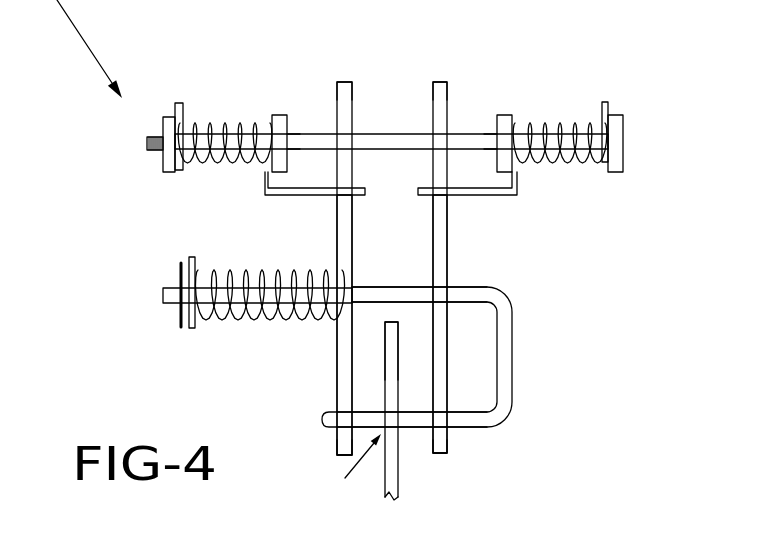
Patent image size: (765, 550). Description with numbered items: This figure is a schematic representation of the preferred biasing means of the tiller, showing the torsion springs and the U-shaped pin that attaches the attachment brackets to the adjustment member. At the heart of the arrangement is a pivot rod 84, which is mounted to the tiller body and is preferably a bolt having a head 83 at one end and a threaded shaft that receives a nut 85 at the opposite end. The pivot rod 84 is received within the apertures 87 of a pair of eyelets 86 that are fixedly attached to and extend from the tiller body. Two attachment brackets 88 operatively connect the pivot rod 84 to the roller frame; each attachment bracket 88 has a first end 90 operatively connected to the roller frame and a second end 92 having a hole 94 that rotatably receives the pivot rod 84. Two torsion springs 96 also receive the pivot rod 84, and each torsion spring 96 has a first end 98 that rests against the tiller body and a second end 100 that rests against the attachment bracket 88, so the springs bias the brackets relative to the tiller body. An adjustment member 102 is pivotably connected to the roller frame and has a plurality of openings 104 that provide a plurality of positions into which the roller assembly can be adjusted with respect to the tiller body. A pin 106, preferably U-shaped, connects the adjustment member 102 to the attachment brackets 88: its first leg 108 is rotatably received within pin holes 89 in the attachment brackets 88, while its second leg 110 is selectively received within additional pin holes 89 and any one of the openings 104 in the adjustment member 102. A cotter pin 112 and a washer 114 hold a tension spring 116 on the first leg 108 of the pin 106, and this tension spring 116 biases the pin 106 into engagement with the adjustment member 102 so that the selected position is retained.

The head 83 is at (617, 157).
The pivot rod 84 is at (400, 136).
The nut 85 is at (162, 175).
The eyelets 86 is at (288, 116).
The apertures 87 is at (271, 116).
The attachment brackets 88 is at (337, 367).
The pin holes 89 is at (356, 304).
The first end 90 is at (342, 448).
The second end 92 is at (342, 81).
The hole 94 is at (337, 122).
The torsion springs 96 is at (223, 165).
The first end 98 is at (179, 104).
The second end 100 is at (322, 198).
The adjustment member 102 is at (385, 470).
The openings 104 is at (340, 464).
The pin 106 is at (512, 347).
The first leg 108 is at (393, 297).
The second leg 110 is at (407, 428).
The cotter pin 112 is at (180, 266).
The washer 114 is at (196, 330).
The tension spring 116 is at (263, 308).